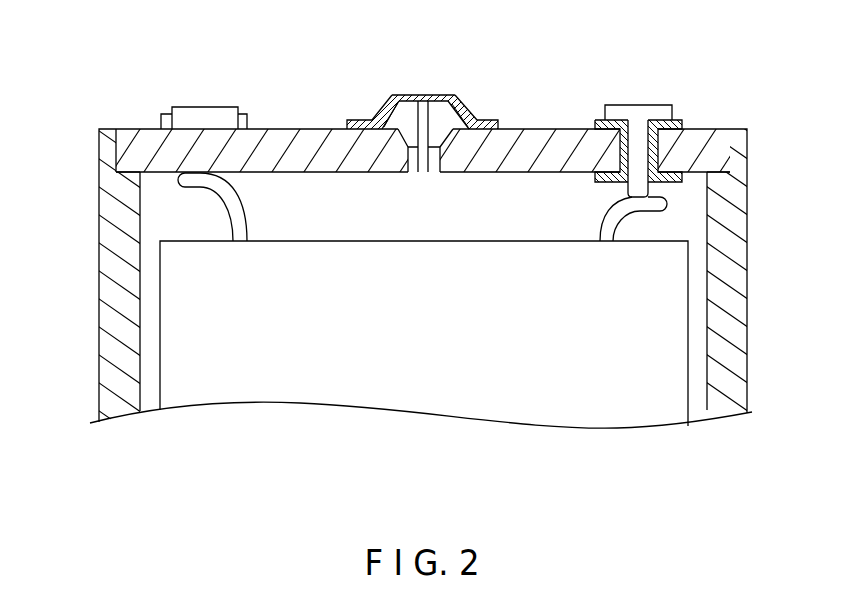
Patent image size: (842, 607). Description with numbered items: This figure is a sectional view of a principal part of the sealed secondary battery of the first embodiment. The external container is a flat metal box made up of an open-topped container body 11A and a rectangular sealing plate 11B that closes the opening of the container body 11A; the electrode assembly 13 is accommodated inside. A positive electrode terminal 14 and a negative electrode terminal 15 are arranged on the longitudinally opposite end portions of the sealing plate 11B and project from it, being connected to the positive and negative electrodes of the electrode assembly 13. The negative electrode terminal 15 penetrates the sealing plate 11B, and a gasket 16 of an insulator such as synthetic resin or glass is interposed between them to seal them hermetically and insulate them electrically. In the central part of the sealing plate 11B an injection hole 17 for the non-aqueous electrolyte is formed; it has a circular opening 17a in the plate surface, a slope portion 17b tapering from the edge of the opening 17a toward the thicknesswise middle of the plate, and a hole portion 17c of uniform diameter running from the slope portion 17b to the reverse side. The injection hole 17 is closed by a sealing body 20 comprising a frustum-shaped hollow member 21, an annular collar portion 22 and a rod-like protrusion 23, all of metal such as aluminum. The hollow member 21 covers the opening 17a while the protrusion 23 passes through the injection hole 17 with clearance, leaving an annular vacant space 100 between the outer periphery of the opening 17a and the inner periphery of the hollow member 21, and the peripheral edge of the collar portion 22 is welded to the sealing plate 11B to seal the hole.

The container body 11A is at (100, 267).
The sealing plate 11B is at (703, 129).
The electrode assembly 13 is at (447, 410).
The positive electrode terminal 14 is at (205, 107).
The negative electrode terminal 15 is at (640, 105).
The gasket 16 is at (598, 120).
The injection hole 17 is at (395, 138).
The opening 17a is at (407, 128).
The slope portion 17b is at (405, 165).
The hole portion 17c is at (402, 172).
The sealing body 20 is at (438, 73).
The hollow member 21 is at (468, 107).
The collar portion 22 is at (360, 120).
The rod-like protrusion 23 is at (423, 93).
The annular vacant space 100 is at (398, 137).